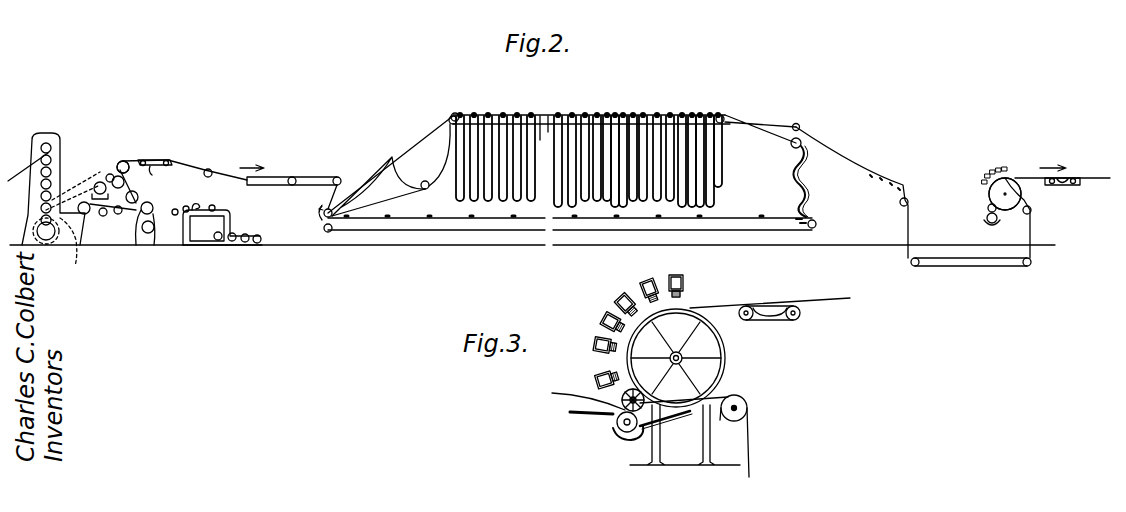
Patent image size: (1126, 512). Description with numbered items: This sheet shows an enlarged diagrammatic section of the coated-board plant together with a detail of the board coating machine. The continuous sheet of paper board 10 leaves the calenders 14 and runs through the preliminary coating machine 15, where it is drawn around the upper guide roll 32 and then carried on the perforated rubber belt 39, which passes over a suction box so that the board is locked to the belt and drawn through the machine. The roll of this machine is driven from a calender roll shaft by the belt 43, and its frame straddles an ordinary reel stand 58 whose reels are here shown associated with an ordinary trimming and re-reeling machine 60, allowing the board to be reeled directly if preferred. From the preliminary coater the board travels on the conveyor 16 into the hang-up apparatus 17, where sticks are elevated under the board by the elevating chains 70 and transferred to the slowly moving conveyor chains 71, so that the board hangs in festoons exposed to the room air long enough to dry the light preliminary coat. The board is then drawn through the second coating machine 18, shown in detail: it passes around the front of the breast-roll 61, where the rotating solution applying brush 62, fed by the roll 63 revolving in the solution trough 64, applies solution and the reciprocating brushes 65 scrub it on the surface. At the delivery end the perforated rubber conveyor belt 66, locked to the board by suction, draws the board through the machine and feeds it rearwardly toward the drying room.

In FIG. 2, the continuous sheet of paper board 10 is at (190, 160).
In FIG. 2, the calenders 14 is at (48, 133).
In FIG. 2, the preliminary coating machine 15 is at (123, 171).
In FIG. 2, the conveyor 16 is at (294, 177).
In FIG. 2, the hang-up apparatus 17 is at (589, 139).
In FIG. 2, the second coating machine 18 is at (994, 175).
In FIG. 3, the second coating machine 18 is at (698, 300).
In FIG. 2, the upper guide roll 32 is at (116, 164).
In FIG. 2, the perforated rubber belt 39 is at (158, 178).
In FIG. 2, the belt 43 is at (82, 250).
In FIG. 2, the reel stand 58 is at (136, 228).
In FIG. 2, the trimming and re-reeling machine 60 is at (232, 210).
In FIG. 2, the breast-roll 61 is at (1022, 193).
In FIG. 3, the breast-roll 61 is at (728, 355).
In FIG. 3, the rotating solution applying brush 62 is at (622, 399).
In FIG. 3, the roll 63 is at (575, 395).
In FIG. 3, the solution trough 64 is at (628, 440).
In FIG. 3, the reciprocating brushes 65 is at (614, 321).
In FIG. 2, the perforated rubber conveyor belt 66 is at (1080, 186).
In FIG. 3, the perforated rubber conveyor belt 66 is at (795, 322).
In FIG. 2, the elevating chains 70 is at (418, 138).
In FIG. 2, the conveyor chains 71 is at (470, 114).